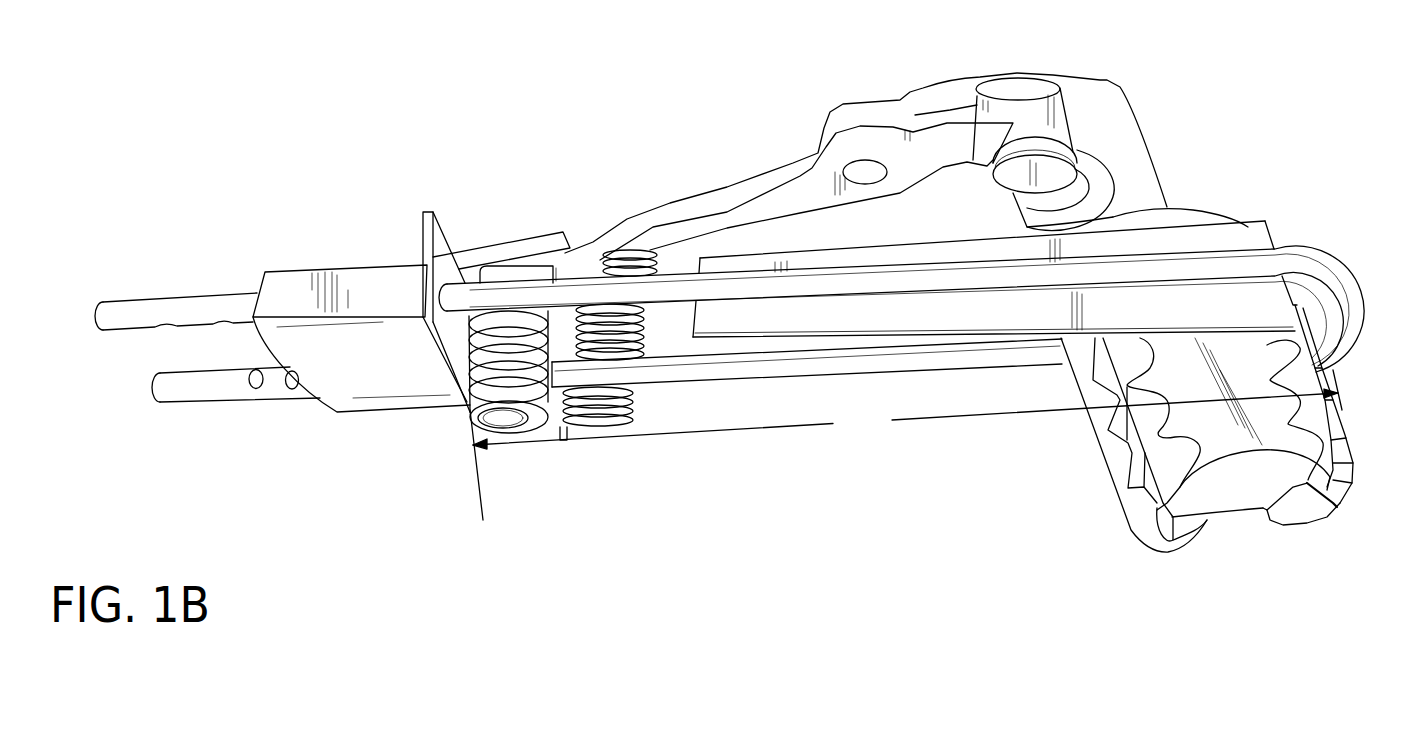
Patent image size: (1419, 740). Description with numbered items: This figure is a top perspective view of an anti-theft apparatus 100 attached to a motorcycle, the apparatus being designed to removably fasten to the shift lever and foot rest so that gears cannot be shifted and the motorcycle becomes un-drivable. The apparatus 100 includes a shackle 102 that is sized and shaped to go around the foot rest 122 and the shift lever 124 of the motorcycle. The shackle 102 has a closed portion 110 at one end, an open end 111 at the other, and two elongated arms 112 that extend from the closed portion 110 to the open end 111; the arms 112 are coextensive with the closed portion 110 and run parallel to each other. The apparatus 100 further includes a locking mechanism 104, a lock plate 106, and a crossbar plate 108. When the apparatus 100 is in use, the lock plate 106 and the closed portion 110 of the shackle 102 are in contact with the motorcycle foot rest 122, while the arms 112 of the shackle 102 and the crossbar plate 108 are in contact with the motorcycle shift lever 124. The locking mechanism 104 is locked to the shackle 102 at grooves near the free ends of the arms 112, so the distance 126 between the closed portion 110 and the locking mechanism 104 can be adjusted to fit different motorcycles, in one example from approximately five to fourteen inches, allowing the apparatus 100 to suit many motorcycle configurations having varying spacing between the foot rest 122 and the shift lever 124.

The apparatus 100 is at (1252, 157).
The shackle 102 is at (660, 290).
The locking mechanism 104 is at (392, 385).
The lock plate 106 is at (946, 315).
The crossbar plate 108 is at (442, 252).
The closed portion 110 is at (1350, 307).
The open end 111 is at (187, 348).
The arms 112 is at (848, 365).
The foot rest 122 is at (1215, 435).
The shift lever 124 is at (507, 395).
The distance 126 is at (906, 445).